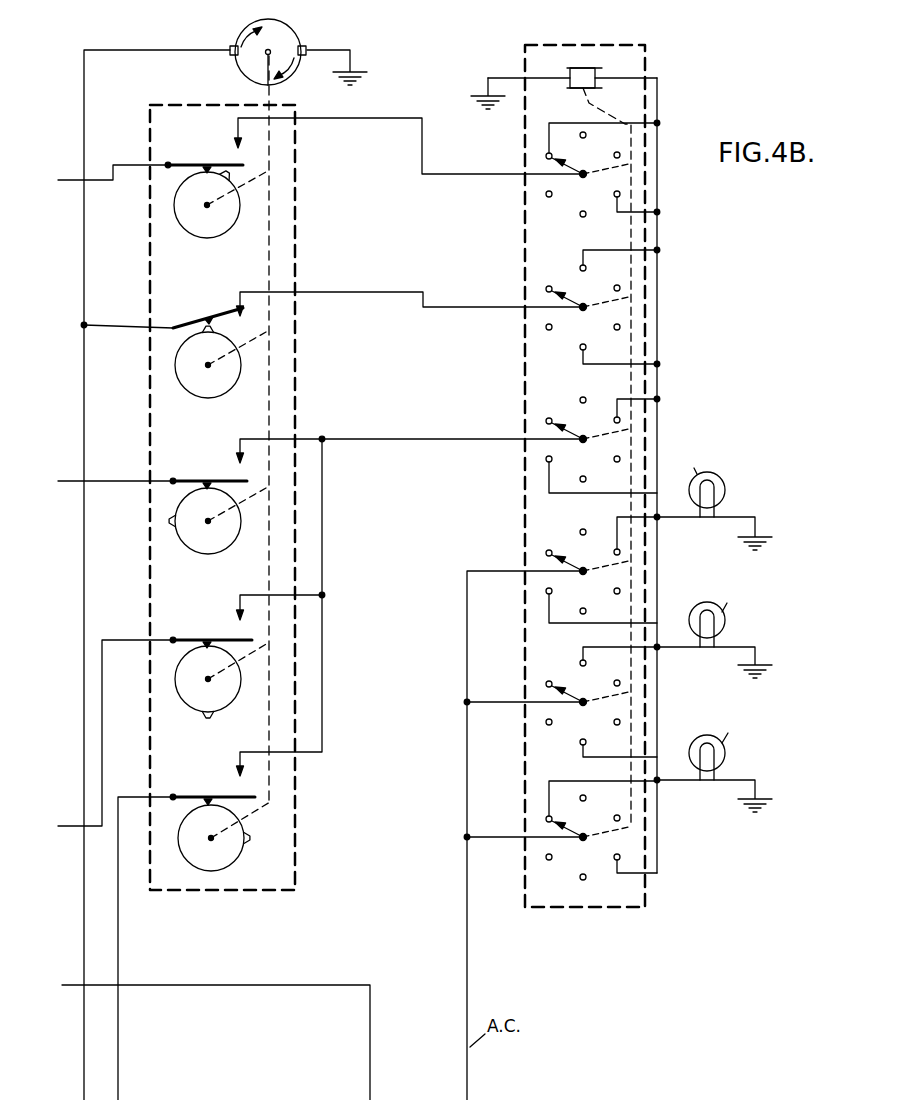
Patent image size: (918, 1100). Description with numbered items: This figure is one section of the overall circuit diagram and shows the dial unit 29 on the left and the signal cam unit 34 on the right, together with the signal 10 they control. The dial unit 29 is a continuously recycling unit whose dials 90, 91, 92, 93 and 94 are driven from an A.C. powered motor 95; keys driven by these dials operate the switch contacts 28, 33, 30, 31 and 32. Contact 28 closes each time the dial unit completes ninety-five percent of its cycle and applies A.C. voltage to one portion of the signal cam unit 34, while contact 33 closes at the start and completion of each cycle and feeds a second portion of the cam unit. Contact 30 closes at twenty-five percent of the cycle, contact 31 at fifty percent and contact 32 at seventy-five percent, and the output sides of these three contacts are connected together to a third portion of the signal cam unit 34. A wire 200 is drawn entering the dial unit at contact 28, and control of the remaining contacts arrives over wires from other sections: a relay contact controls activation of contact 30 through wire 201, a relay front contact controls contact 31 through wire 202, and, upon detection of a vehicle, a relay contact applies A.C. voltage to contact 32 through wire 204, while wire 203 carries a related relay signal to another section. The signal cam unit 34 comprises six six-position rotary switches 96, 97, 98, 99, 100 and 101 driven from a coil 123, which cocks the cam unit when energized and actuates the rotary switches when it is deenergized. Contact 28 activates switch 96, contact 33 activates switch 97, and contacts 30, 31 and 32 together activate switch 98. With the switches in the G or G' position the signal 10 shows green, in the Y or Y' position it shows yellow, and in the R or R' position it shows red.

The signal 10 is at (775, 812).
The switch contact 28 is at (223, 163).
The dial unit 29 is at (208, 103).
The contact 30 is at (232, 480).
The contact 31 is at (232, 638).
The contact 32 is at (238, 794).
The contact 33 is at (219, 311).
The signal cam unit 34 is at (583, 43).
The dial 90 is at (189, 231).
The dial 91 is at (192, 394).
The dial 92 is at (196, 549).
The dial 93 is at (190, 706).
The dial 94 is at (187, 857).
The A.C. powered motor 95 is at (297, 32).
The six-position rotary switch 96 is at (567, 166).
The six-position rotary switch 97 is at (567, 299).
The six-position rotary switch 98 is at (567, 431).
The six-position rotary switch 99 is at (567, 563).
The six-position rotary switch 100 is at (567, 694).
The six-position rotary switch 101 is at (594, 833).
The coil 123 is at (564, 435).
The conductor 200 is at (128, 160).
The wire 201 is at (137, 480).
The wire 202 is at (130, 640).
The wire 203 is at (130, 985).
The wire 204 is at (122, 942).